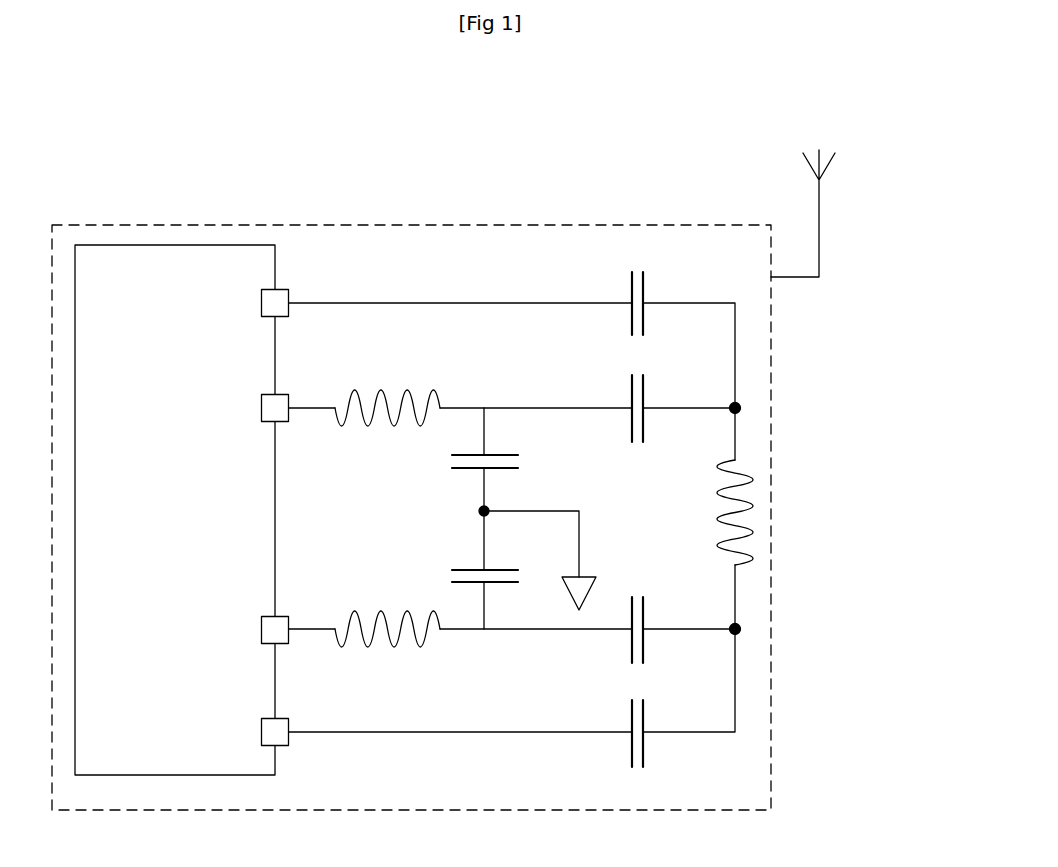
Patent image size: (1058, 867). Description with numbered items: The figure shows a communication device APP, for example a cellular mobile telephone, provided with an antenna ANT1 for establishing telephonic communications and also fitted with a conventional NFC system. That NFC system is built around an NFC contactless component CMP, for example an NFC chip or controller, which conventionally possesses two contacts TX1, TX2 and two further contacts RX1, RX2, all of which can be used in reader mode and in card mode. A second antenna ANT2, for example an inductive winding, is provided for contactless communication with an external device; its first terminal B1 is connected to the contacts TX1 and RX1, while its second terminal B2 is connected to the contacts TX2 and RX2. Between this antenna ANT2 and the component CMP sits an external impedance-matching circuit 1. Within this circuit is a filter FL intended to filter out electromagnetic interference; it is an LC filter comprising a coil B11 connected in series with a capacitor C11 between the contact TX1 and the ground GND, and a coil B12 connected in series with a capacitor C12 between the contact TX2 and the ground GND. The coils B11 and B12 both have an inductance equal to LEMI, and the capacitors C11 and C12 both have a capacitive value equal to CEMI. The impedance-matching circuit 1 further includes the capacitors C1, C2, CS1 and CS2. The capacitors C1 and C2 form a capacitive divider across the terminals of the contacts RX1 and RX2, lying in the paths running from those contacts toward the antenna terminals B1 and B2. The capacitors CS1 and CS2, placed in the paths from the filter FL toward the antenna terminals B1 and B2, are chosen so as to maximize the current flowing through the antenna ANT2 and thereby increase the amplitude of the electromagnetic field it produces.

The communication device APP is at (553, 142).
The NFC contactless component CMP is at (182, 459).
The external impedance-matching circuit 1 is at (606, 470).
The antenna ANT1 is at (821, 202).
The antenna ANT2 is at (780, 489).
The contact RX1 is at (260, 308).
The contact TX1 is at (258, 401).
The contact TX2 is at (260, 637).
The contact RX2 is at (260, 742).
The filter FL is at (430, 326).
The inductance LEMI is at (366, 522).
The capacitive value CEMI is at (508, 522).
The capacitor C11 is at (468, 455).
The capacitor C12 is at (465, 582).
The coil B11 is at (391, 447).
The coil B12 is at (377, 588).
The capacitor C1 is at (638, 323).
The capacitor CS1 is at (637, 427).
The capacitor CS2 is at (637, 648).
The capacitor C2 is at (638, 752).
The first terminal B1 is at (740, 408).
The second terminal B2 is at (740, 628).
The ground GND is at (568, 558).